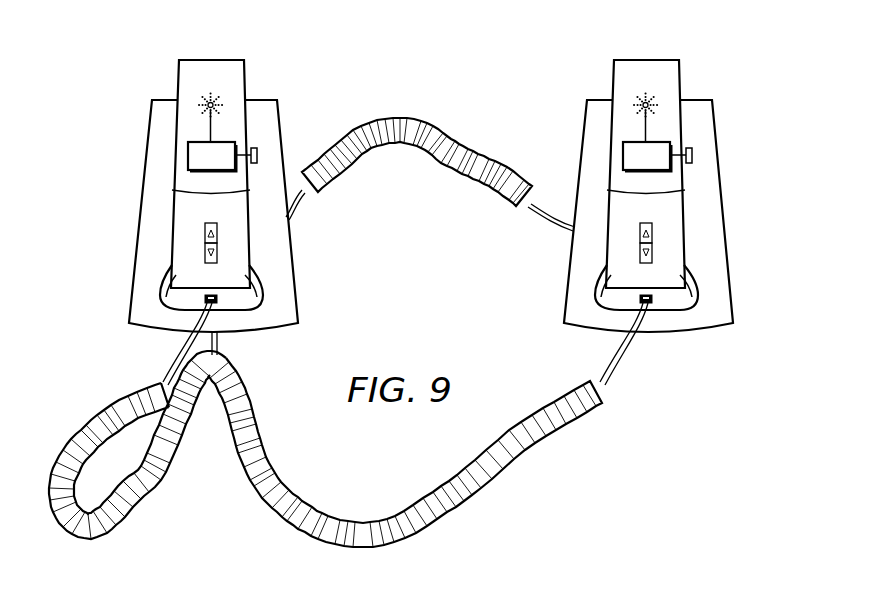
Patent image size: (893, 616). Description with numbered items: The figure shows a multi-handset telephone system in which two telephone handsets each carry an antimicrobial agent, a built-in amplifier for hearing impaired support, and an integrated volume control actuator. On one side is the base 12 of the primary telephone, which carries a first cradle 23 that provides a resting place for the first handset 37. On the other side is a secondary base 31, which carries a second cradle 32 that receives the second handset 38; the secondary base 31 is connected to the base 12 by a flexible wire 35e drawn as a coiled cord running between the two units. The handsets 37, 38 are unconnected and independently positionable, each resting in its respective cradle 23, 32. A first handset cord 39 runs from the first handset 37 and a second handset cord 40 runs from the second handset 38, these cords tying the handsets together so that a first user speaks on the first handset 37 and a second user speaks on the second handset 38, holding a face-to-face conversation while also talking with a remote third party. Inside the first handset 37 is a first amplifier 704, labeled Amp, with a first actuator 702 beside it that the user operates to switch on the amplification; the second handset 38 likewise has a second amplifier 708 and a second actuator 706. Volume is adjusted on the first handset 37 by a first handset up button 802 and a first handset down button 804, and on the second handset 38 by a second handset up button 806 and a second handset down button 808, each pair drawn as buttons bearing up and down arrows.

The base 12 is at (664, 177).
The first cradle 23 is at (607, 287).
The secondary base 31 is at (270, 97).
The second cradle 32 is at (170, 290).
The flexible wire 35e is at (395, 117).
The first handset 37 is at (613, 149).
The second handset 38 is at (185, 60).
The first handset cord 39 is at (366, 548).
The second handset cord 40 is at (96, 539).
The first actuator 702 is at (722, 145).
The first amplifier 704 is at (605, 133).
The second actuator 706 is at (257, 156).
The second amplifier 708 is at (197, 142).
The first handset up button 802 is at (709, 223).
The first handset down button 804 is at (587, 252).
The second handset up button 806 is at (217, 231).
The second handset down button 808 is at (205, 258).